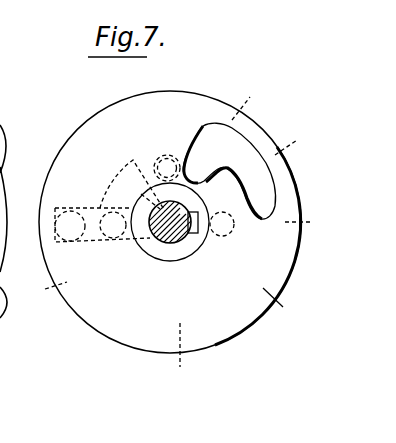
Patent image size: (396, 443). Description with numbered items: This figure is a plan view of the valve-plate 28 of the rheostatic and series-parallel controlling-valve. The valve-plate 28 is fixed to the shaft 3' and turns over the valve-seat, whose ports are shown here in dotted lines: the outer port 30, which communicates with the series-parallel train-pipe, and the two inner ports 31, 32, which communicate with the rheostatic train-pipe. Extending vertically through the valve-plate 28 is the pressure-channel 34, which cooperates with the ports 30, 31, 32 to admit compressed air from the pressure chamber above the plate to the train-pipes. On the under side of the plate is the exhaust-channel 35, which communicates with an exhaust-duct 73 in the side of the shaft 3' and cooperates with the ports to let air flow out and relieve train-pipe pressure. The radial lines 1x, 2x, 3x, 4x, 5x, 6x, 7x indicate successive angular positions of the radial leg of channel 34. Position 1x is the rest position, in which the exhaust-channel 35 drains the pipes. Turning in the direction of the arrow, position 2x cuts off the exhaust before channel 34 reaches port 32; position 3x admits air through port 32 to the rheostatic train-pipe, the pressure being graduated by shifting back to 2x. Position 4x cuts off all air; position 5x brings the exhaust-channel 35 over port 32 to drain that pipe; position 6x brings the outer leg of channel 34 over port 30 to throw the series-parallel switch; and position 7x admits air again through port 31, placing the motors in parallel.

The valve-plate 28 is at (170, 222).
The pressure-channel 34 is at (229, 171).
The exhaust-channel 35 is at (100, 208).
The exhaust-duct 73 is at (139, 197).
The outer port 30 is at (64, 243).
The inner port 31 is at (112, 238).
The inner port 32 is at (220, 237).
The shaft 3' is at (173, 242).
The radial line (rest position) 1x is at (248, 102).
The radial line (cut-off position) 2x is at (297, 140).
The radial line (rheostatic pressure position) 3x is at (312, 219).
The radial line (cut-off position) 4x is at (287, 306).
The radial line (exhaust position) 5x is at (183, 356).
The radial line (series-parallel position) 6x is at (45, 291).
The radial line (parallel position) 7x is at (55, 225).